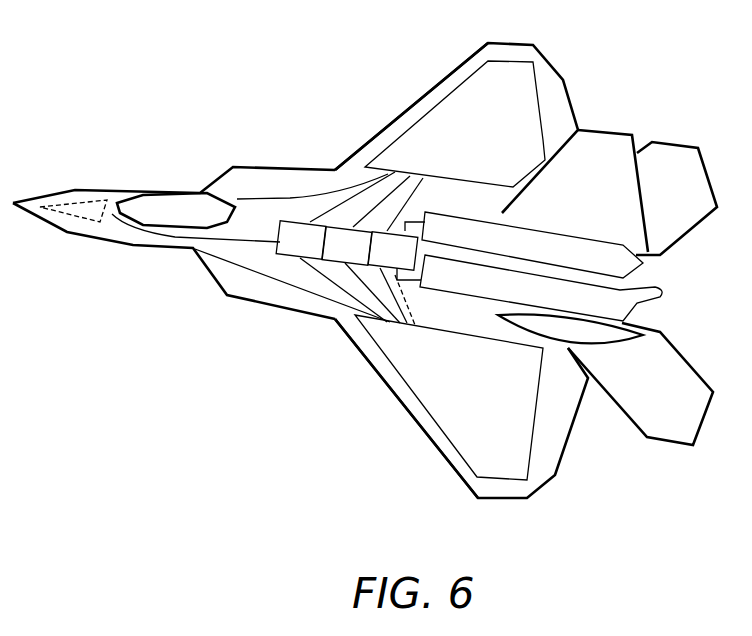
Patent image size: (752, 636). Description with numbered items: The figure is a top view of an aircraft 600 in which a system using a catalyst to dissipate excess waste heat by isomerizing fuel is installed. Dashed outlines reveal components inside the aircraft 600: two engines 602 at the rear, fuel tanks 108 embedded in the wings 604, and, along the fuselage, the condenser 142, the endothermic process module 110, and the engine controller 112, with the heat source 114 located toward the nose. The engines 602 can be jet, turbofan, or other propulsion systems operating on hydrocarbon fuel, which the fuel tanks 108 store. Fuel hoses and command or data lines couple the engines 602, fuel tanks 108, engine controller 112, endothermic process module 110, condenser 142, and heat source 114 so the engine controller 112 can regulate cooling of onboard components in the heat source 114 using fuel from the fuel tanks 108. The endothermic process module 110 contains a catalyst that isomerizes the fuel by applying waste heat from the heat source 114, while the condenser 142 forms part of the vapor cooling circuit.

The aircraft 600 is at (155, 46).
The heat source 114 is at (93, 208).
The fuel tanks 108 is at (493, 148).
The wings 604 is at (450, 75).
The engines 602 is at (560, 258).
The condenser 142 is at (282, 250).
The endothermic process module 110 is at (328, 256).
The engine controller 112 is at (374, 261).